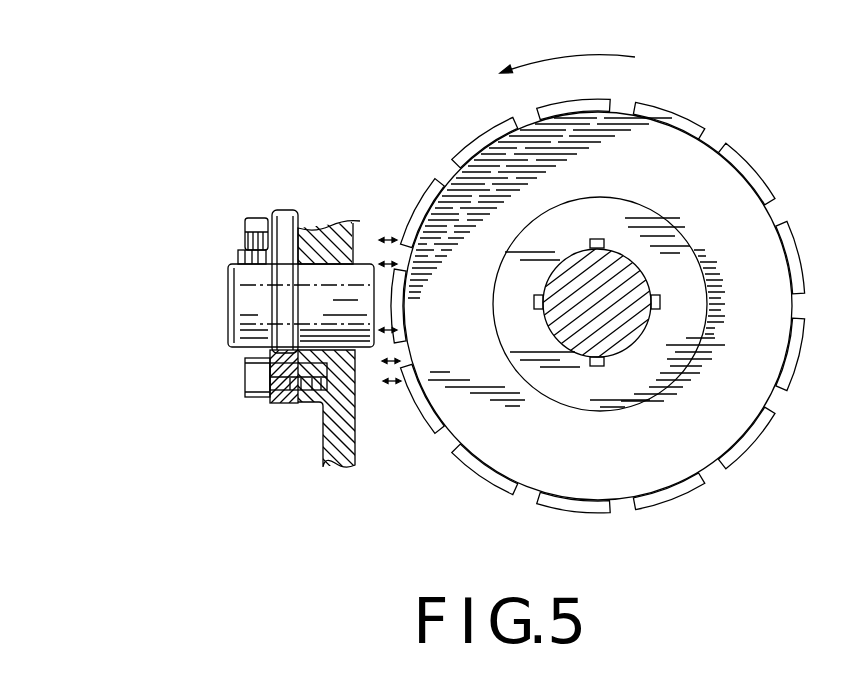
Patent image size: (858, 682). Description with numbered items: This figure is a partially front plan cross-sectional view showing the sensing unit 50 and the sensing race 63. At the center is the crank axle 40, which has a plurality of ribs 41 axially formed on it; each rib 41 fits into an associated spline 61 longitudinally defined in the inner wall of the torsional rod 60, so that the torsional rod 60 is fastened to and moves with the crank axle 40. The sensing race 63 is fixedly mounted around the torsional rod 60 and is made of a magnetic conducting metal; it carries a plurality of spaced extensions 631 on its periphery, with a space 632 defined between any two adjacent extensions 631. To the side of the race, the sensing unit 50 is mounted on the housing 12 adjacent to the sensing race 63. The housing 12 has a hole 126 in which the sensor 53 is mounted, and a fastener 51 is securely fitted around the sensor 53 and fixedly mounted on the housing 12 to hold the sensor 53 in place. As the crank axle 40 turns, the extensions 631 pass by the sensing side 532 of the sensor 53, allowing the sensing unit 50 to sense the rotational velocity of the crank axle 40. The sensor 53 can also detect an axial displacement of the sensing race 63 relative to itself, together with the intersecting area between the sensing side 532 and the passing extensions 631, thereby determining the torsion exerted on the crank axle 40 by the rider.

The sensing unit 50 is at (247, 207).
The fastener 51 is at (280, 208).
The housing 12 is at (314, 242).
The sensing side 532 is at (380, 237).
The sensor 53 is at (258, 300).
The hole 126 is at (356, 349).
The sensing race 63 is at (800, 203).
The extensions 631 is at (658, 110).
The spaces 632 is at (707, 135).
The torsional rod 60 is at (640, 232).
The splines 61 is at (653, 300).
The crank axle 40 is at (630, 333).
The ribs 41 is at (592, 367).